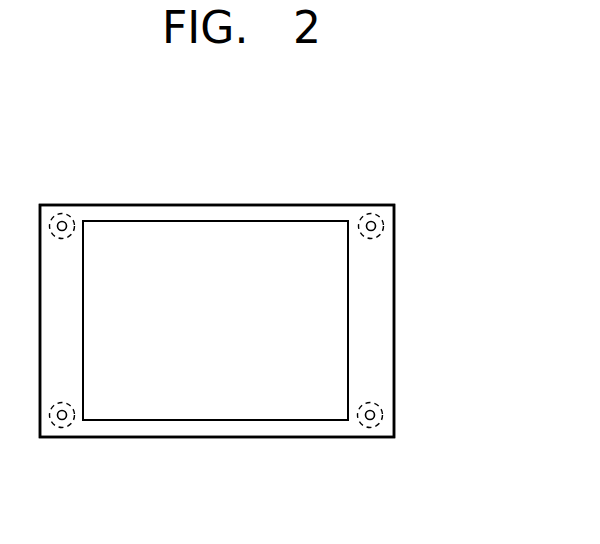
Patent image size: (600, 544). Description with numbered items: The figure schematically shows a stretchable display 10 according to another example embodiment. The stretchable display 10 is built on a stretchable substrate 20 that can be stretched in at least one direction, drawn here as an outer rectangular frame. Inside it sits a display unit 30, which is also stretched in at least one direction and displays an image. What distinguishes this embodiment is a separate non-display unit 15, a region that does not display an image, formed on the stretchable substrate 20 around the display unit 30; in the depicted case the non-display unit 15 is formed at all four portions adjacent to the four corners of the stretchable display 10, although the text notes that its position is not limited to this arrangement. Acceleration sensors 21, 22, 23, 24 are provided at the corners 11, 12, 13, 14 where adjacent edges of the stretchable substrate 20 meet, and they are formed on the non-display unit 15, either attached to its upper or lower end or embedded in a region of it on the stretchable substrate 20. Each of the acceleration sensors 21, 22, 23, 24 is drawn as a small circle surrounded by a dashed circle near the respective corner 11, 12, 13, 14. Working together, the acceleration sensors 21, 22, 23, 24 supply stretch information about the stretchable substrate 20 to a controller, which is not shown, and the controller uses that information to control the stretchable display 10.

The stretchable display 10 is at (440, 141).
The corner 11 is at (68, 217).
The corner 12 is at (365, 217).
The corner 13 is at (365, 423).
The corner 14 is at (68, 423).
The non-display unit 15 is at (377, 280).
The stretchable substrate 20 is at (394, 321).
The acceleration sensor 21 is at (60, 216).
The acceleration sensor 22 is at (372, 216).
The acceleration sensor 23 is at (372, 424).
The acceleration sensor 24 is at (60, 424).
The display unit 30 is at (348, 352).